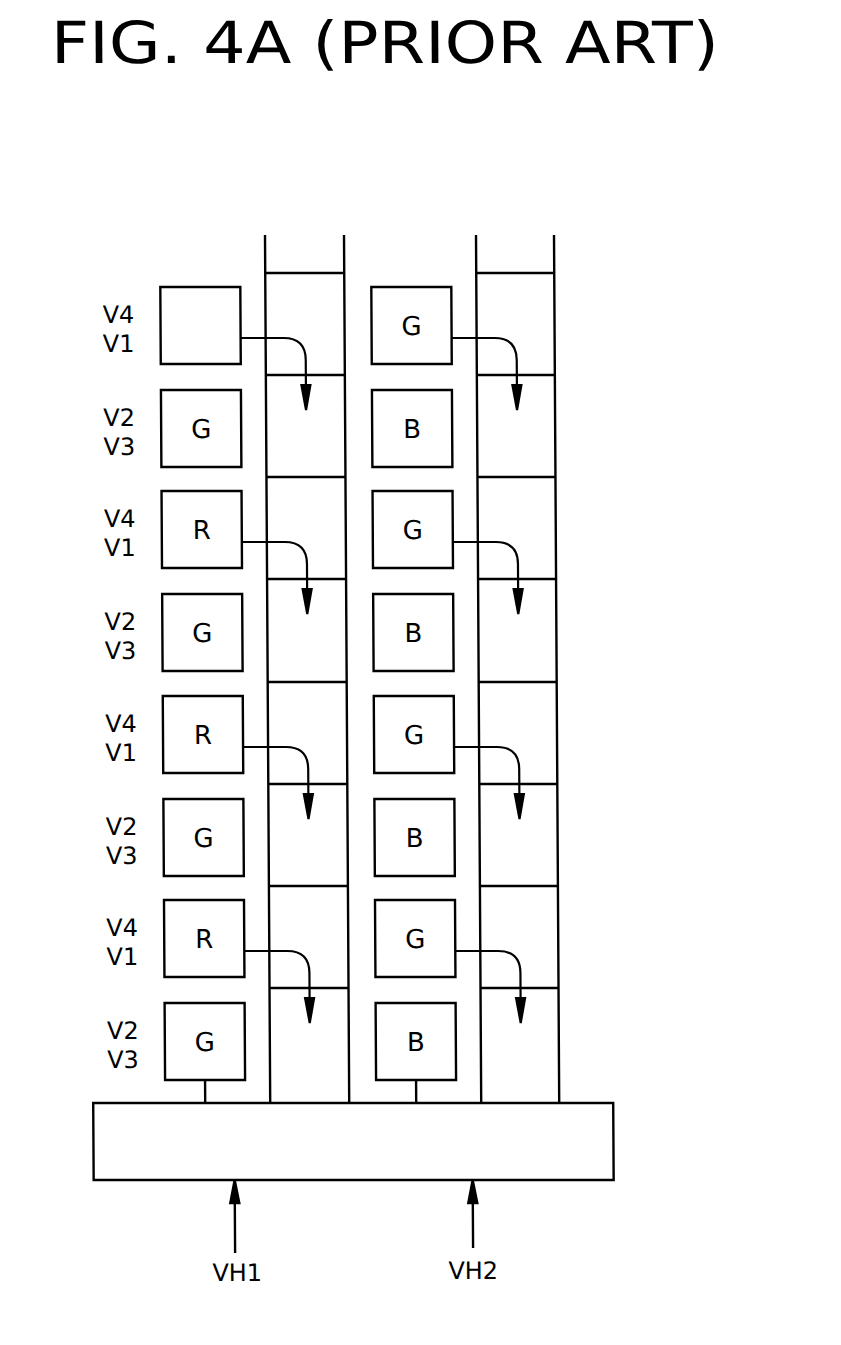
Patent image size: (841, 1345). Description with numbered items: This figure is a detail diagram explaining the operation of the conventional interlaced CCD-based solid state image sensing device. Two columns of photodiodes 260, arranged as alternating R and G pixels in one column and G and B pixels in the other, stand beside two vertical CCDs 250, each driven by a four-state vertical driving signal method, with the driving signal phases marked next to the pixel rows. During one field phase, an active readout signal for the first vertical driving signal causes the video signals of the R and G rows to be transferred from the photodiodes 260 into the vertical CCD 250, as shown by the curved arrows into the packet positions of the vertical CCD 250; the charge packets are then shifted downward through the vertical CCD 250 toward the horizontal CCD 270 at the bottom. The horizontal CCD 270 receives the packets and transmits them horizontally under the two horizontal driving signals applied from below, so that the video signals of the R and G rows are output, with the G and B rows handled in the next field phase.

The photodiode 260 is at (199, 287).
The vertical CCD 250 is at (555, 1047).
The horizontal CCD 270 is at (608, 1142).